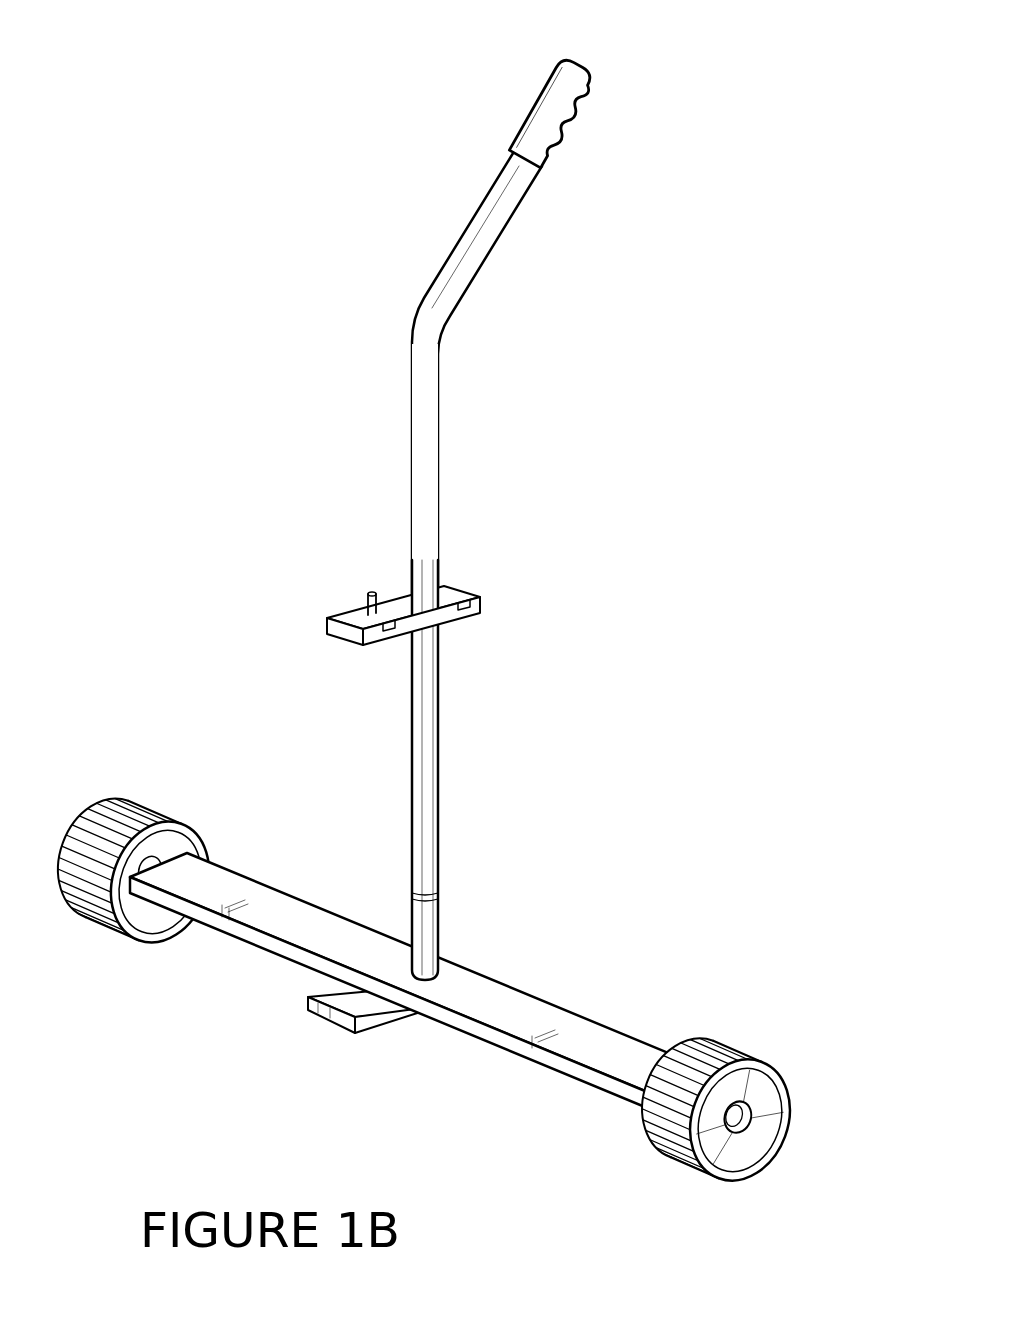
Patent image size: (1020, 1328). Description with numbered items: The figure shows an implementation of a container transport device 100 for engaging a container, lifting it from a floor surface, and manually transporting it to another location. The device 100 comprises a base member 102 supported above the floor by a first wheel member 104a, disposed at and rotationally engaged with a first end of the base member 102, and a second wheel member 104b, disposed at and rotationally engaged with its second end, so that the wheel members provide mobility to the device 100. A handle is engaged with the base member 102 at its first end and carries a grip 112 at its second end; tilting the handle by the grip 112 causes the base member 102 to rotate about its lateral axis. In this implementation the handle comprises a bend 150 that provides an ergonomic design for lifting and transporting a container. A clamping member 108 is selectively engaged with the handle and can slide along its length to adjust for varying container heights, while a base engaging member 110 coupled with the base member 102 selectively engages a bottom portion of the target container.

The container transport device 100 is at (170, 157).
The base member 102 is at (498, 997).
The first wheel member 104a is at (110, 800).
The second wheel member 104b is at (773, 1075).
The clamping member 108 is at (479, 608).
The base engaging member 110 is at (315, 1015).
The grip 112 is at (570, 125).
The bend 150 is at (456, 332).